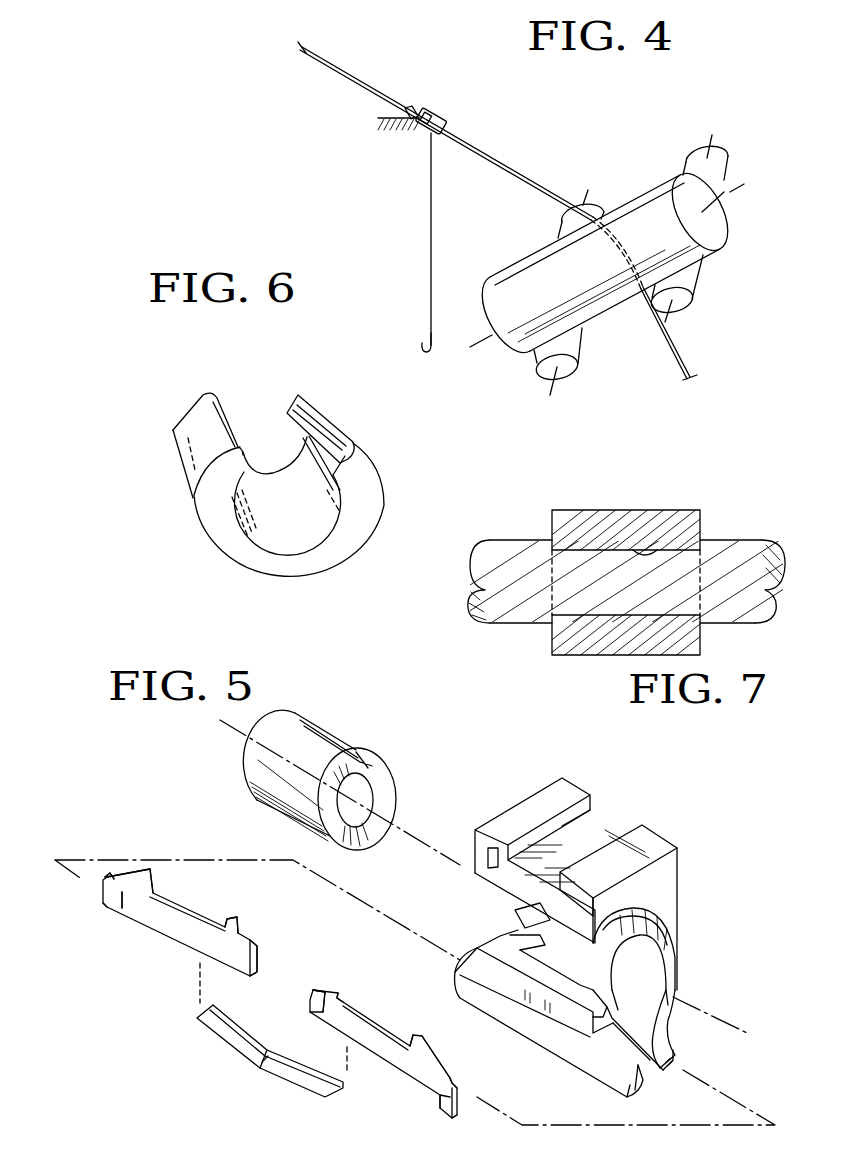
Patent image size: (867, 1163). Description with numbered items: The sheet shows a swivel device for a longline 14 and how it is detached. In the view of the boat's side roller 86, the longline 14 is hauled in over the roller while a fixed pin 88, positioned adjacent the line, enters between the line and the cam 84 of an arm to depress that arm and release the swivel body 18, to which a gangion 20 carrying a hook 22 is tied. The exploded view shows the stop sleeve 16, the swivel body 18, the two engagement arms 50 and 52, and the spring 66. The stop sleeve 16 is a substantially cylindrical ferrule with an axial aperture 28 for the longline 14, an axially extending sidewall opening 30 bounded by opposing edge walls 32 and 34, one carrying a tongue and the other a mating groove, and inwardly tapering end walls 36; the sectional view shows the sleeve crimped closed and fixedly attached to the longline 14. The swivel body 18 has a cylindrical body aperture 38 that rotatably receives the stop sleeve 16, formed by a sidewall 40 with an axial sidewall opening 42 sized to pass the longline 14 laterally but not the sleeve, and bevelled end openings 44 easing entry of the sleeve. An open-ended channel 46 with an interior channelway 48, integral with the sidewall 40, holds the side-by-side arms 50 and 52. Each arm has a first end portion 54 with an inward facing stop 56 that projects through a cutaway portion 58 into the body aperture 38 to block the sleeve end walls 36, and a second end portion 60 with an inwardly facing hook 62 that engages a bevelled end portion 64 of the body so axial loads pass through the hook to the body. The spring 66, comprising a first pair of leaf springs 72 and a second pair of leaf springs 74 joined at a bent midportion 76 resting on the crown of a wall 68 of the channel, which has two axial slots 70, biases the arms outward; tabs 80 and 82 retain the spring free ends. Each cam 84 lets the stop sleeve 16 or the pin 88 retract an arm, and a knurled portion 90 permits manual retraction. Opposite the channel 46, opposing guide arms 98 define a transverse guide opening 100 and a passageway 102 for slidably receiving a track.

In FIG. 4, the longline 14 is at (483, 153).
In FIG. 7, the longline 14 is at (508, 545).
In FIG. 6, the stop sleeve 16 is at (243, 474).
In FIG. 7, the stop sleeve 16 is at (638, 556).
In FIG. 5, the stop sleeve 16 is at (339, 773).
In FIG. 5, the swivel body 18 is at (572, 928).
In FIG. 4, the gangion 20 is at (431, 200).
In FIG. 4, the hook 22 is at (431, 331).
In FIG. 6, the axial aperture 28 is at (280, 523).
In FIG. 7, the axial aperture 28 is at (650, 552).
In FIG. 5, the axial aperture 28 is at (350, 815).
In FIG. 6, the sidewall opening 30 is at (244, 388).
In FIG. 5, the sidewall opening 30 is at (320, 725).
In FIG. 6, the edge wall 32 is at (222, 398).
In FIG. 5, the edge wall 32 is at (366, 768).
In FIG. 6, the edge wall 34 is at (293, 410).
In FIG. 6, the end walls 36 is at (318, 562).
In FIG. 7, the end walls 36 is at (553, 520).
In FIG. 5, the end walls 36 is at (388, 793).
In FIG. 5, the body aperture 38 is at (645, 942).
In FIG. 5, the sidewall 40 is at (680, 970).
In FIG. 5, the sidewall opening 42 is at (560, 975).
In FIG. 5, the end openings 44 is at (530, 927).
In FIG. 5, the channel 46 is at (575, 1060).
In FIG. 5, the channelway 48 is at (650, 1045).
In FIG. 5, the arm 50 is at (190, 945).
In FIG. 5, the arm 52 is at (395, 1070).
In FIG. 5, the first end portion 54 is at (122, 915).
In FIG. 5, the stop 56 is at (158, 888).
In FIG. 5, the cutaway portions 58 is at (518, 945).
In FIG. 5, the second end portion 60 is at (242, 965).
In FIG. 5, the hook 62 is at (232, 920).
In FIG. 5, the bevelled end portion 64 is at (530, 950).
In FIG. 5, the spring 66 is at (245, 1068).
In FIG. 5, the wall 68 is at (660, 1070).
In FIG. 5, the slots 70 is at (645, 1085).
In FIG. 5, the first pair of leaf springs 72 is at (260, 1066).
In FIG. 5, the second pair of leaf springs 74 is at (215, 1045).
In FIG. 5, the midportion 76 is at (265, 1078).
In FIG. 5, the tab 80 is at (105, 910).
In FIG. 5, the tab 82 is at (455, 1120).
In FIG. 5, the cam 84 is at (118, 876).
In FIG. 4, the side roller 86 is at (638, 202).
In FIG. 4, the pin 88 is at (412, 107).
In FIG. 5, the knurled portion 90 is at (105, 878).
In FIG. 5, the guide arms 98 is at (573, 790).
In FIG. 5, the guide opening 100 is at (488, 865).
In FIG. 5, the passageway 102 is at (616, 806).